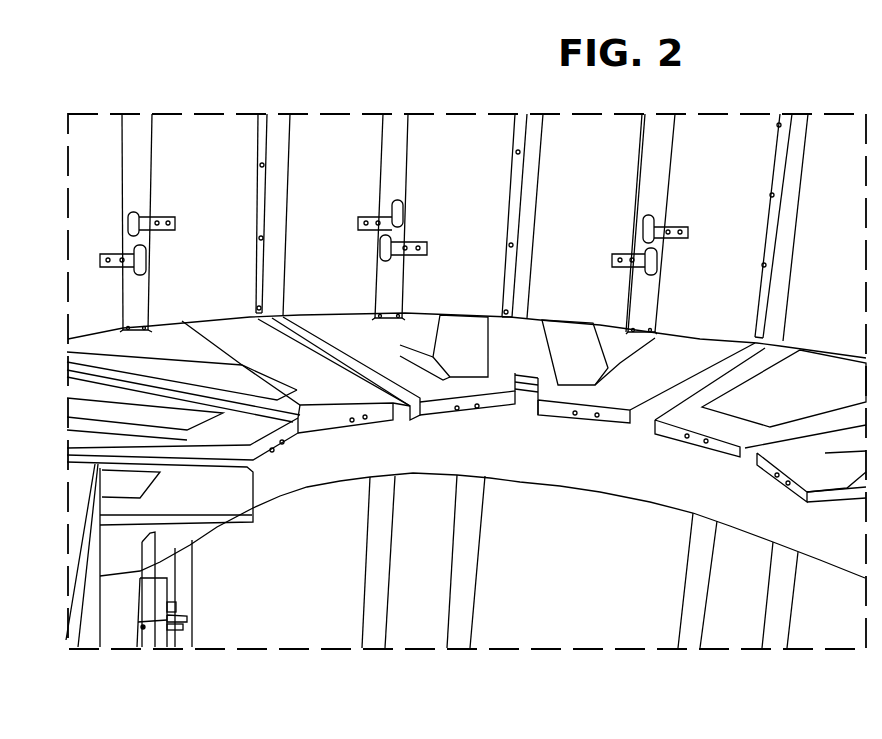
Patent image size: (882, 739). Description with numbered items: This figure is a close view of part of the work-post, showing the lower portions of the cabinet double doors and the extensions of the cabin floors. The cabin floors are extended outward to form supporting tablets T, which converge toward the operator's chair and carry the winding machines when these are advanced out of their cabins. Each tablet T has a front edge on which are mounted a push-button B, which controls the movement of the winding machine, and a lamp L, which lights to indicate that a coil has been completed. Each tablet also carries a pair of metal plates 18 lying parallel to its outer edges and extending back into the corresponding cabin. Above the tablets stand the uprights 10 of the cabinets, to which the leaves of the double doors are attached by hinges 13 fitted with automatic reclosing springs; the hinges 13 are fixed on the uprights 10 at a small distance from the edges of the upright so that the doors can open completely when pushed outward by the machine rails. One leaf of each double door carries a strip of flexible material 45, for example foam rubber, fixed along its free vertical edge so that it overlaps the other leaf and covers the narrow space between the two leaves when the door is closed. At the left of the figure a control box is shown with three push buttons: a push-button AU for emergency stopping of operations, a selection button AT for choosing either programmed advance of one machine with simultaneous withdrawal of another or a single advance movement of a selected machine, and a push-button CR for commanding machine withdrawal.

The strip of flexible material 45 is at (276, 125).
The upright 10 is at (400, 126).
The hinge 13 is at (650, 215).
The metal plate 18 is at (452, 346).
The supporting tablet T is at (386, 410).
The lamp L is at (572, 414).
The push-button B is at (598, 420).
The push-button for machine withdrawal CR is at (178, 600).
The selection button AT is at (182, 613).
The emergency stop push-button AU is at (175, 634).